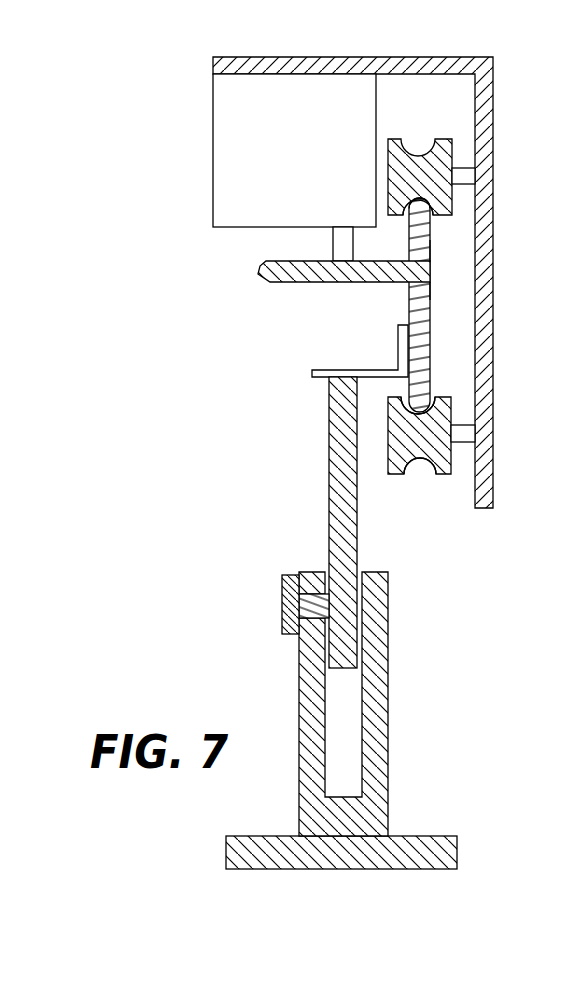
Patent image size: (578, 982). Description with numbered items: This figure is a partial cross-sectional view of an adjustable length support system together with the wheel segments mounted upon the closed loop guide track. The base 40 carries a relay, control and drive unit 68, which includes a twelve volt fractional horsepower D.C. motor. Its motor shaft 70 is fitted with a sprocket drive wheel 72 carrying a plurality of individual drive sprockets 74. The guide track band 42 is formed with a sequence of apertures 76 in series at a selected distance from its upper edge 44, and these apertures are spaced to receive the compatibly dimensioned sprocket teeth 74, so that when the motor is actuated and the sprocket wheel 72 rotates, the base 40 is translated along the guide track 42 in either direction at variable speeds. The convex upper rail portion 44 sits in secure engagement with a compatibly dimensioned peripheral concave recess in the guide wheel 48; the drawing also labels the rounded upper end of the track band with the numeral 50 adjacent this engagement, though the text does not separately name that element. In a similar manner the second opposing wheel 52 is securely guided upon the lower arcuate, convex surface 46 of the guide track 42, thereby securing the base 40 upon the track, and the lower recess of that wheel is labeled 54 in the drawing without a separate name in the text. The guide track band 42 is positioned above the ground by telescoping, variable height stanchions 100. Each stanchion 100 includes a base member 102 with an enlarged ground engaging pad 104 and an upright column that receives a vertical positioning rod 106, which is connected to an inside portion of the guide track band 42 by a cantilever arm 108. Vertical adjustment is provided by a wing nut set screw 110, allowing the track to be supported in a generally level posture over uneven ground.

The base 40 is at (490, 308).
The guide track band 42 is at (430, 356).
The upper edge 44 is at (413, 201).
The lower convex surface 46 is at (415, 410).
The guide wheel 48 is at (400, 137).
The rounded shaft end 50 is at (407, 206).
The second opposing wheel 52 is at (388, 450).
The lower recess of lower block 54 is at (410, 463).
The relay, control and drive unit 68 is at (213, 155).
The motor shaft 70 is at (333, 243).
The sprocket drive wheel 72 is at (296, 283).
The drive sprockets 74 is at (430, 262).
The apertures 76 is at (430, 290).
The stanchion 100 is at (350, 623).
The base member 102 is at (388, 640).
The ground engaging pad 104 is at (457, 855).
The vertical positioning rod 106 is at (329, 442).
The cantilever arm 108 is at (312, 372).
The wing nut set screw 110 is at (282, 590).